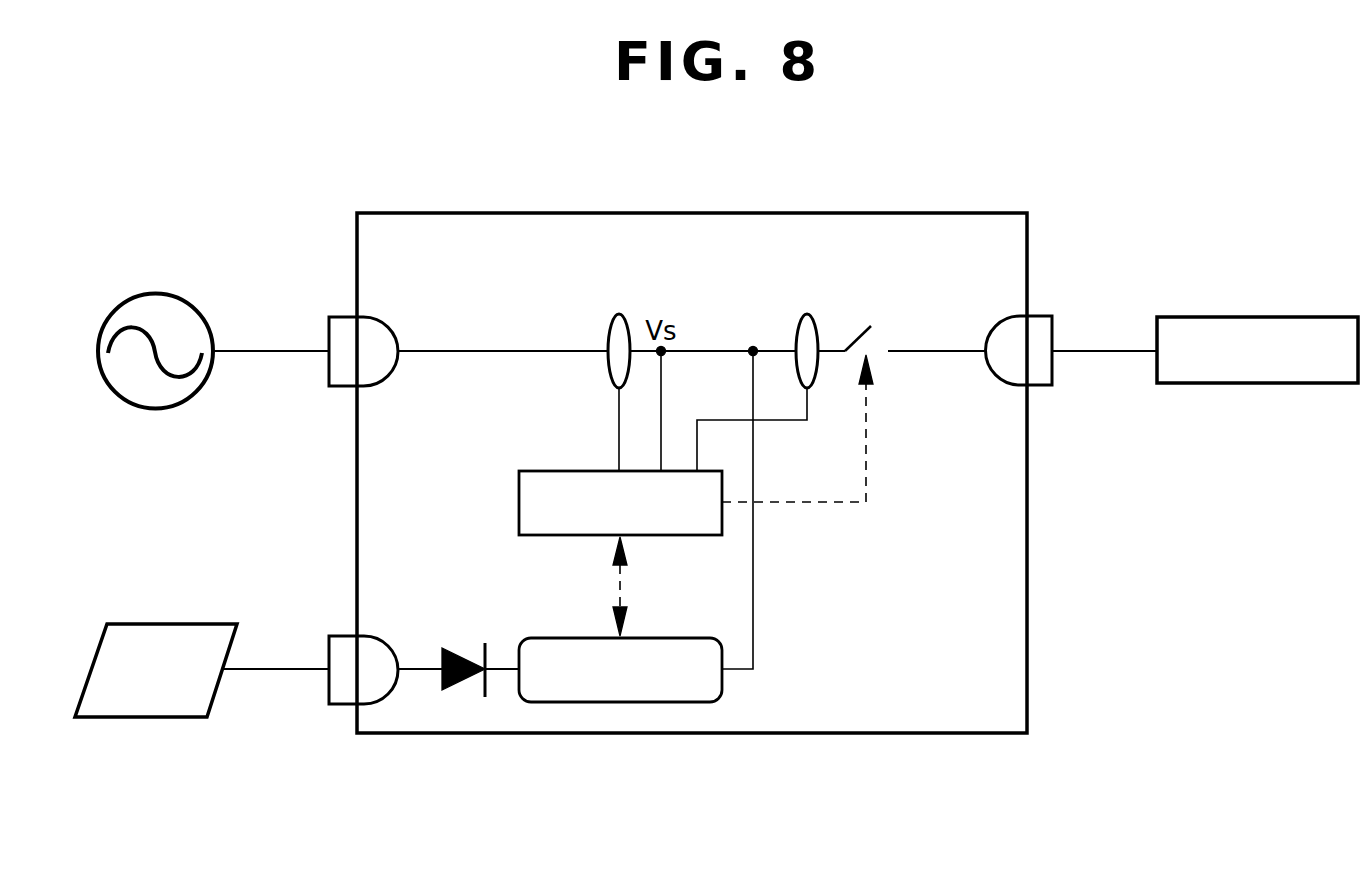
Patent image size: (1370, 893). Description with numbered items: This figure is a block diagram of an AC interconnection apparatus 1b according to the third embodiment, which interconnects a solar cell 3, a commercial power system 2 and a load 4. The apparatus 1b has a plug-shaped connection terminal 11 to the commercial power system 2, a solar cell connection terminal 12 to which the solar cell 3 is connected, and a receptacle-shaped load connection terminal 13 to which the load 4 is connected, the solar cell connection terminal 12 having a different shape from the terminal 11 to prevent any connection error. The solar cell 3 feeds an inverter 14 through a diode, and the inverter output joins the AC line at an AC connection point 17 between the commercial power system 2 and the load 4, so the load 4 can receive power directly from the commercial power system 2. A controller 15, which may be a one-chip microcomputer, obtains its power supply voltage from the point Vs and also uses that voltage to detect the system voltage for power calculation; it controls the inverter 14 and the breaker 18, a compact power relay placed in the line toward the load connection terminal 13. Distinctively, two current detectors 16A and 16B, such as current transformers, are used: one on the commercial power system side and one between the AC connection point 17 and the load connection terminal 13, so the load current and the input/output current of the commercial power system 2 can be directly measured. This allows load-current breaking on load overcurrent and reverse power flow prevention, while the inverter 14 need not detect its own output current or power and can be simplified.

The AC interconnection apparatus 1b is at (540, 212).
The commercial power system 2 is at (157, 402).
The solar cell 3 is at (157, 706).
The load 4 is at (1256, 385).
The connection terminal 11 is at (335, 378).
The solar cell connection terminal 12 is at (337, 698).
The load connection terminal 13 is at (1047, 376).
The inverter 14 is at (537, 637).
The controller 15 is at (537, 470).
The current detector 16A is at (620, 313).
The current detector 16B is at (808, 312).
The AC connection point 17 is at (746, 490).
The breaker 18 is at (870, 325).